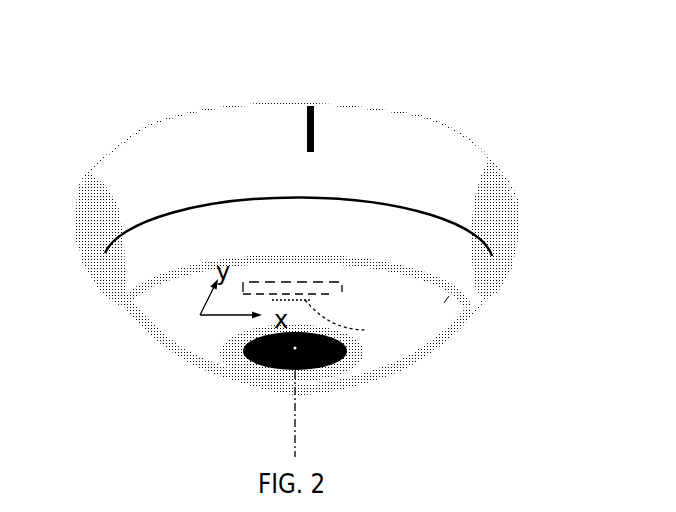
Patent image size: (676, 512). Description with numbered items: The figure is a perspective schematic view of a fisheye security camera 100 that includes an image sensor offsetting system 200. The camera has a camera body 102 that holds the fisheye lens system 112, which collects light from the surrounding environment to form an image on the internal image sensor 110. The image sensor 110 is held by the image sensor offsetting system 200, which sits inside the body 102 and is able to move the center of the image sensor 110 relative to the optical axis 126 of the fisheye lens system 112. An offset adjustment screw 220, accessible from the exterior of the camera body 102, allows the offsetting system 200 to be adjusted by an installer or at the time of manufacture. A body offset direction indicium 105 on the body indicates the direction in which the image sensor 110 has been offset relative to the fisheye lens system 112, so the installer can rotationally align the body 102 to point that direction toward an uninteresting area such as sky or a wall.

The fisheye security camera 100 is at (143, 73).
The camera body 102 is at (110, 195).
The body offset direction indicium 105 is at (306, 120).
The image sensor offsetting system 200 is at (291, 280).
The image sensor 110 is at (353, 322).
The fisheye lens system 112 is at (262, 362).
The optical axis 126 is at (300, 410).
The offset adjustment screw 220 is at (450, 313).